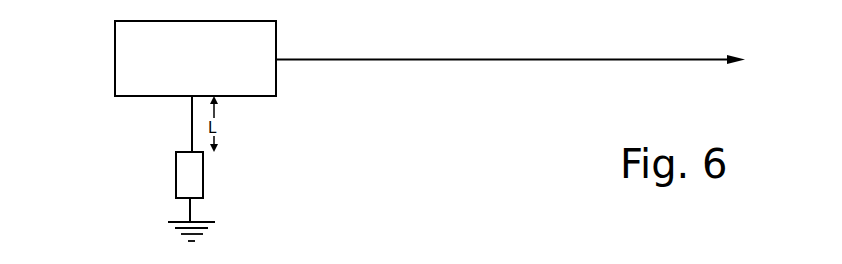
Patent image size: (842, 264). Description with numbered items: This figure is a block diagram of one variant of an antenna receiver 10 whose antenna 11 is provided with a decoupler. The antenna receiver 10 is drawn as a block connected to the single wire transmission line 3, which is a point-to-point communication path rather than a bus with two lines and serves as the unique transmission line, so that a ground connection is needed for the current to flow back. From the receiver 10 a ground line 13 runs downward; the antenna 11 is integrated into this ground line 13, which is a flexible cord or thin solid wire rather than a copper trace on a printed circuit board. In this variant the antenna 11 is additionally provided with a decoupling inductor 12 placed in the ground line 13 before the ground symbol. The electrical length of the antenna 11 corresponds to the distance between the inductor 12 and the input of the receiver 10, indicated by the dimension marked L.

The antenna receiver 10 is at (115, 60).
The single wire transmission line 3 is at (470, 60).
The ground line 13 is at (191, 117).
The antenna 11 is at (149, 133).
The decoupling inductor 12 is at (176, 182).